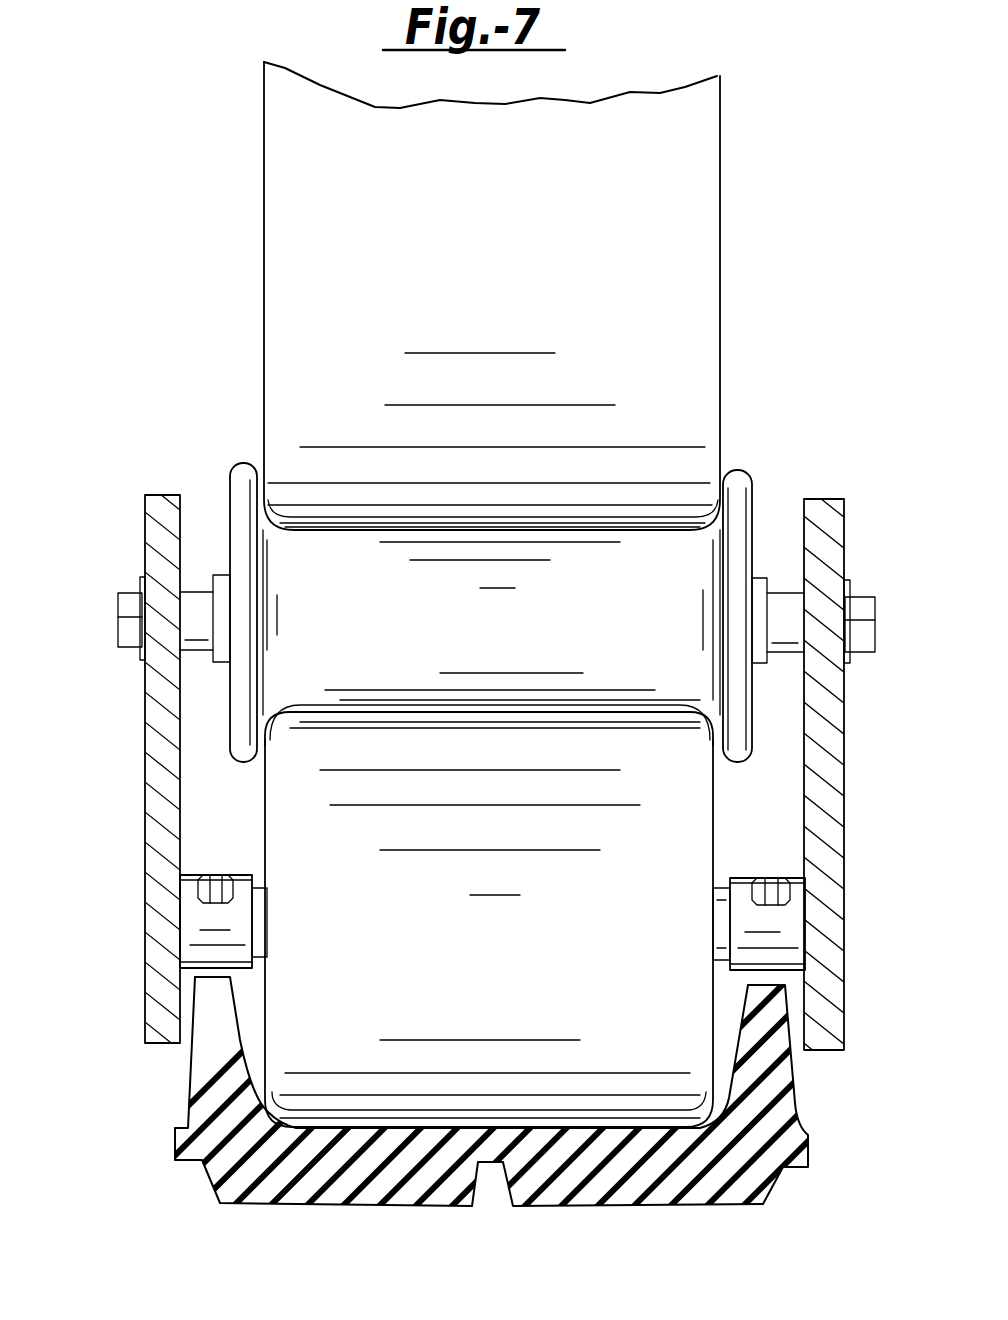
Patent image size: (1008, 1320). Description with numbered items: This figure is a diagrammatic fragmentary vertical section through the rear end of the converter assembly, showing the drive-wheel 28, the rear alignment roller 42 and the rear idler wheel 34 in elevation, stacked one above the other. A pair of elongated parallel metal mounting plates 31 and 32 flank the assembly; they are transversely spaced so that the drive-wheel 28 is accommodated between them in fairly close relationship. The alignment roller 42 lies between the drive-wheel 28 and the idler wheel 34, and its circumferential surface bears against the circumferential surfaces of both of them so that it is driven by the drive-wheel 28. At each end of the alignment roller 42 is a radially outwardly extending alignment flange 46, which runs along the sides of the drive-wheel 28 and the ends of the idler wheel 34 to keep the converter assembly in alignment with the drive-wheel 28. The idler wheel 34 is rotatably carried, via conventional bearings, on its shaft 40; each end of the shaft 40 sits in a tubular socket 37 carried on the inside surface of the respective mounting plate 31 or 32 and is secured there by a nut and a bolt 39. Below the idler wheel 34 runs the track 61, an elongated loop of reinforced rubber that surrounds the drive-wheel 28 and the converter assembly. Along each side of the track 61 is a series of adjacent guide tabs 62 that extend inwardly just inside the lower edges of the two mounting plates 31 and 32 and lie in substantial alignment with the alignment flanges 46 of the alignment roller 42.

The drive-wheel 28 is at (466, 320).
The alignment roller 42 is at (496, 642).
The idler wheel 34 is at (502, 971).
The alignment flange 46 is at (744, 468).
The mounting plate 31 is at (145, 835).
The mounting plate 32 is at (845, 820).
The tubular socket 37 is at (790, 930).
The bolt 39 is at (765, 878).
The shaft 40 is at (718, 888).
The track 61 is at (775, 1210).
The guide tab 62 is at (790, 1120).